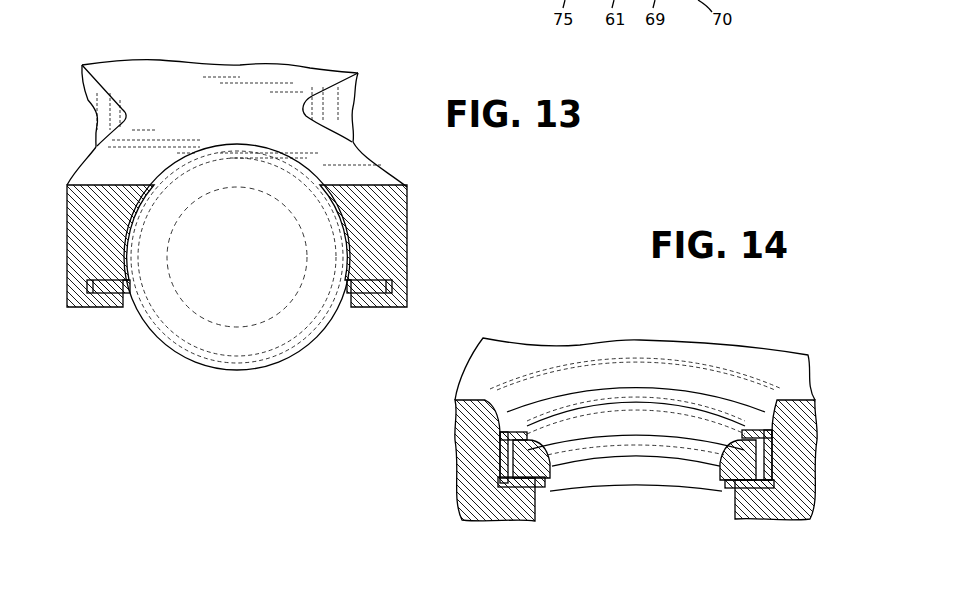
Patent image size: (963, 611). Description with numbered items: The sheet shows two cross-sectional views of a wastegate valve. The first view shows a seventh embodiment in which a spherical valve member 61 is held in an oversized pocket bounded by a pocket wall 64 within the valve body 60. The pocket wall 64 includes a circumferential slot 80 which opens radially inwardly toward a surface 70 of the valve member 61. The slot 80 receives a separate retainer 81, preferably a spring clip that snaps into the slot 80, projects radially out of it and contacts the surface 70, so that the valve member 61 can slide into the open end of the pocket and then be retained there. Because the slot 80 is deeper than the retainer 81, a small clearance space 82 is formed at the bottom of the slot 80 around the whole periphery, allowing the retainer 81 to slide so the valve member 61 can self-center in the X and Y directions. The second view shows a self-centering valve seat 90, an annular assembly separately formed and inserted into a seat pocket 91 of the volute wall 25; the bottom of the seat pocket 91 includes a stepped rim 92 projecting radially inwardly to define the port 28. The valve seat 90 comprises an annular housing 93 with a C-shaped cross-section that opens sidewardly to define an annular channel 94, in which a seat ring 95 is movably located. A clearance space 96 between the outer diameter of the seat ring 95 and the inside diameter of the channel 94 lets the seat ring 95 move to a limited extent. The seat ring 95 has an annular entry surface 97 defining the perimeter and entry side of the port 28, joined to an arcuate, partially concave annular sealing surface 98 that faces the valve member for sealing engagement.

In FIG. 13, the housing body 60 is at (355, 168).
In FIG. 13, the valve member 61 is at (197, 175).
In FIG. 13, the pocket wall 64 is at (385, 214).
In FIG. 13, the surface 70 is at (147, 245).
In FIG. 13, the circumferential slot 80 is at (107, 300).
In FIG. 13, the retainer 81 is at (375, 298).
In FIG. 13, the clearance space 82 is at (390, 286).
In FIG. 14, the volute wall 25 is at (796, 503).
In FIG. 14, the port 28 is at (643, 500).
In FIG. 14, the valve seat 90 is at (573, 382).
In FIG. 14, the seat pocket 91 is at (754, 492).
In FIG. 14, the stepped rim 92 is at (742, 496).
In FIG. 14, the annular housing 93 is at (515, 438).
In FIG. 14, the annular channel 94 is at (508, 462).
In FIG. 14, the seat ring 95 is at (502, 484).
In FIG. 14, the clearance space 96 is at (500, 417).
In FIG. 14, the annular entry surface 97 is at (571, 452).
In FIG. 14, the annular sealing surface 98 is at (665, 425).